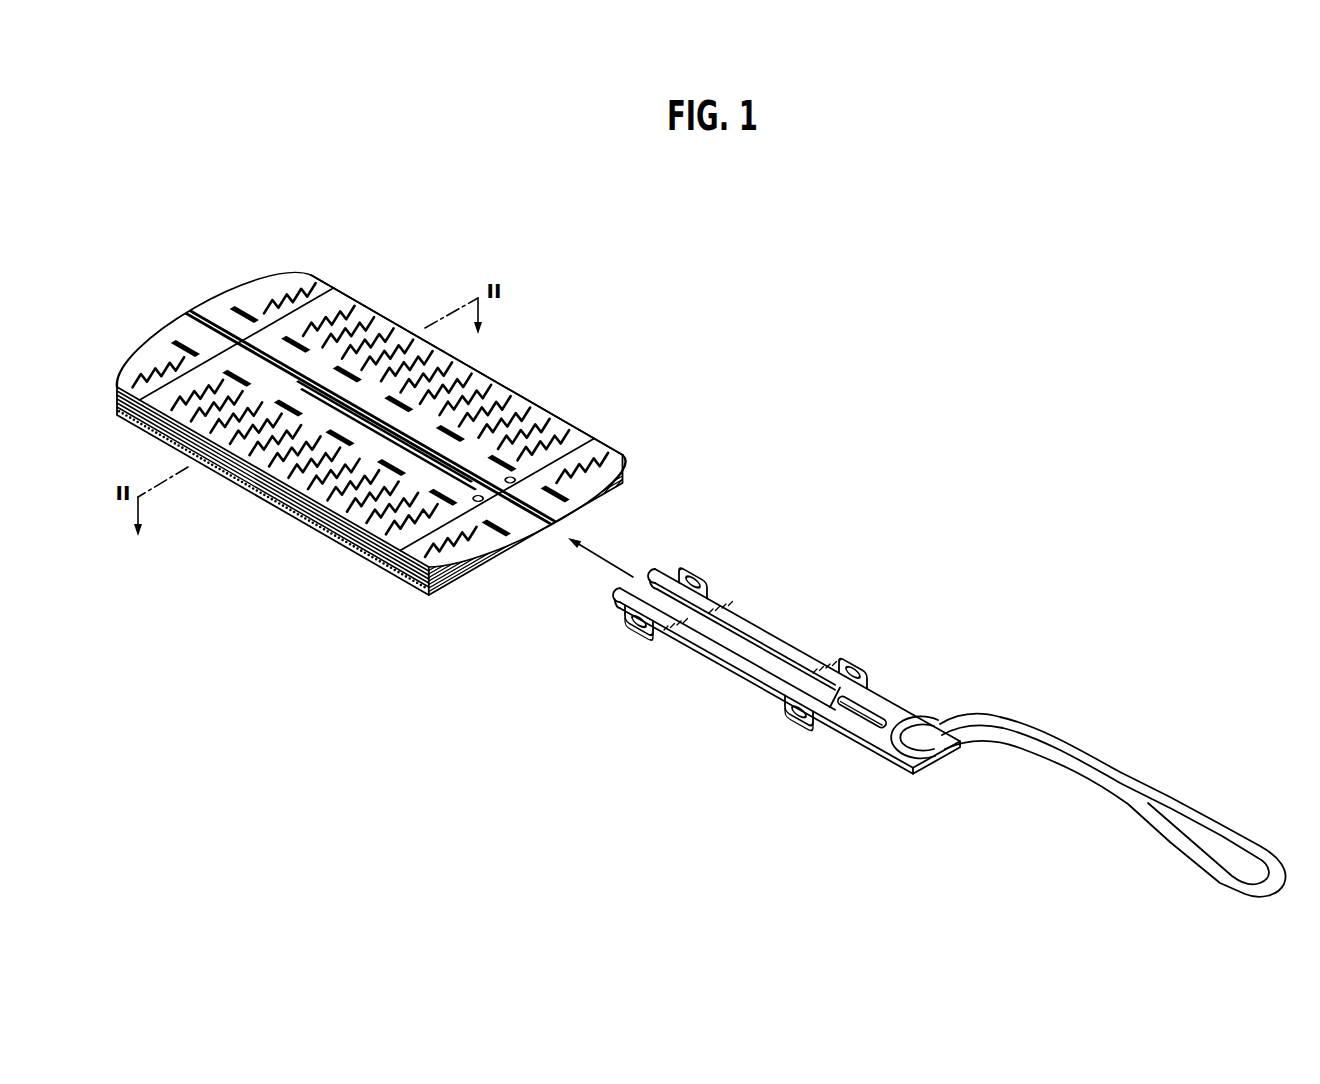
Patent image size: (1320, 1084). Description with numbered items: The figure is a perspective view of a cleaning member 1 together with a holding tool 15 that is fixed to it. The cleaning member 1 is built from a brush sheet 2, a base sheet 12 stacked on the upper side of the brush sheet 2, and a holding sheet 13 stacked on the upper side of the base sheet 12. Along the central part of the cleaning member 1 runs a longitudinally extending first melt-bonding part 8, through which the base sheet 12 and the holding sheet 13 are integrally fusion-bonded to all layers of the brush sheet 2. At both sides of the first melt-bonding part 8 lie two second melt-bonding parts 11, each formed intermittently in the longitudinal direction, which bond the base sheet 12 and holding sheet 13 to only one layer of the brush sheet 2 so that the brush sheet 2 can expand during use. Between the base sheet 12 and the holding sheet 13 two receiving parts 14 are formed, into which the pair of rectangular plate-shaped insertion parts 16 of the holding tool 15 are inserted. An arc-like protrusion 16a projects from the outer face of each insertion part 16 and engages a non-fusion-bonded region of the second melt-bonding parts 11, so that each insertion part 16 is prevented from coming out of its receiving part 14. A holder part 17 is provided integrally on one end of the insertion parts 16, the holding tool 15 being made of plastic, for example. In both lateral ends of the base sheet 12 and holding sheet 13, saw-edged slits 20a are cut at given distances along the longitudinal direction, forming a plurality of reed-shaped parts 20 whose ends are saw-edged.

The cleaning member 1 is at (390, 270).
The brush sheet 2 is at (258, 507).
The first melt-bonding part 8 is at (213, 327).
The second melt-bonding parts 11 is at (174, 343).
The base sheet 12 is at (607, 478).
The holding sheet 13 is at (571, 436).
The receiving part 14 is at (481, 500).
The holding tool 15 is at (923, 731).
The insertion part 16 is at (740, 660).
The arc-like protrusion 16a is at (627, 626).
The holder part 17 is at (1070, 743).
The reed-shaped parts 20 is at (555, 418).
The saw-edged slits 20a is at (532, 412).